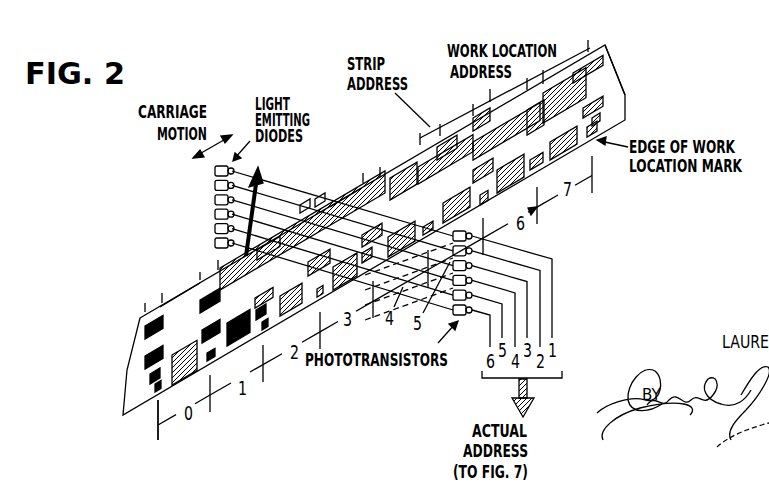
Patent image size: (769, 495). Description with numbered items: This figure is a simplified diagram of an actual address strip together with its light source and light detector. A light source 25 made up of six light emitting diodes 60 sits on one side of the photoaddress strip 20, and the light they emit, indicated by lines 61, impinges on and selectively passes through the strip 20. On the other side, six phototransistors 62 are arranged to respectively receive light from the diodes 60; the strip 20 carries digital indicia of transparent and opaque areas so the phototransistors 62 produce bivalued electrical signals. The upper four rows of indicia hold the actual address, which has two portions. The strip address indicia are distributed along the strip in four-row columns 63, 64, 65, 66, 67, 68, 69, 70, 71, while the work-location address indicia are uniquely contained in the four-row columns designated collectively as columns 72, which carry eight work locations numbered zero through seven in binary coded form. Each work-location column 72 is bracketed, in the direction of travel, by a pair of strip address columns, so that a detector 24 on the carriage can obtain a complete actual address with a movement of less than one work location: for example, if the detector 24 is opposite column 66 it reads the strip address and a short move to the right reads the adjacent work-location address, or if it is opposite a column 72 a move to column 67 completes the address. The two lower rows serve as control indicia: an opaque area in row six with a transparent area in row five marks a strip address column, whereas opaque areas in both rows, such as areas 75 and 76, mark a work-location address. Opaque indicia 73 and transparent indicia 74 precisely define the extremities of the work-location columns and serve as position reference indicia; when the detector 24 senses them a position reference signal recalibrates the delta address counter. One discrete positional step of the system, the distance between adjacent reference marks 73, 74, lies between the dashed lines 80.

The photoaddress strip 20 is at (133, 331).
The detector 24 is at (557, 252).
The light source 25 is at (198, 172).
The light emitting diodes 60 is at (215, 243).
The lines indicating emitted light 61 is at (263, 207).
The phototransistors 62 is at (474, 286).
The strip address column 63 is at (155, 302).
The strip address column 64 is at (209, 278).
The strip address column 65 is at (304, 204).
The strip address column 66 is at (319, 200).
The strip address column 67 is at (374, 176).
The strip address column 68 is at (421, 134).
The strip address column 69 is at (458, 118).
The strip address column 70 is at (605, 64).
The strip address column 71 is at (588, 44).
The work-location address columns 72 is at (183, 287).
The opaque indicia 73 is at (155, 392).
The transparent indicia 74 is at (158, 378).
The opaque area 75 is at (147, 420).
The opaque area 76 is at (178, 352).
The dashed lines 80 is at (542, 205).